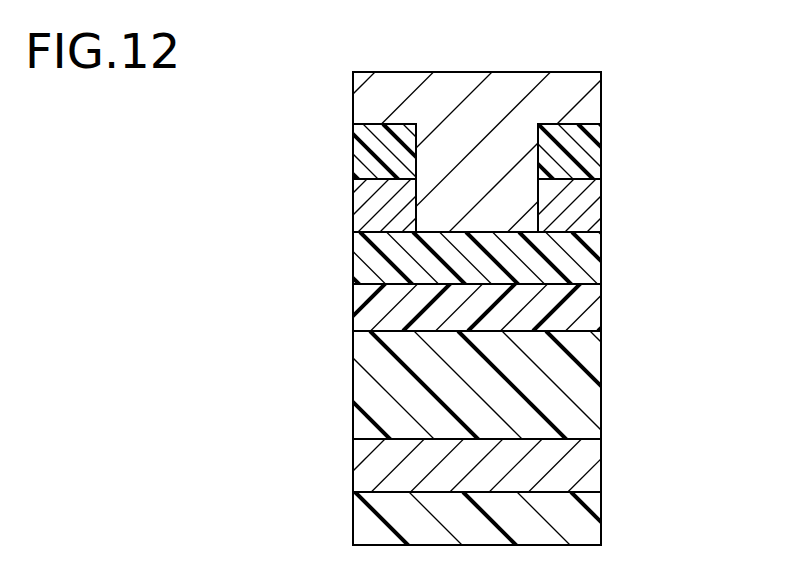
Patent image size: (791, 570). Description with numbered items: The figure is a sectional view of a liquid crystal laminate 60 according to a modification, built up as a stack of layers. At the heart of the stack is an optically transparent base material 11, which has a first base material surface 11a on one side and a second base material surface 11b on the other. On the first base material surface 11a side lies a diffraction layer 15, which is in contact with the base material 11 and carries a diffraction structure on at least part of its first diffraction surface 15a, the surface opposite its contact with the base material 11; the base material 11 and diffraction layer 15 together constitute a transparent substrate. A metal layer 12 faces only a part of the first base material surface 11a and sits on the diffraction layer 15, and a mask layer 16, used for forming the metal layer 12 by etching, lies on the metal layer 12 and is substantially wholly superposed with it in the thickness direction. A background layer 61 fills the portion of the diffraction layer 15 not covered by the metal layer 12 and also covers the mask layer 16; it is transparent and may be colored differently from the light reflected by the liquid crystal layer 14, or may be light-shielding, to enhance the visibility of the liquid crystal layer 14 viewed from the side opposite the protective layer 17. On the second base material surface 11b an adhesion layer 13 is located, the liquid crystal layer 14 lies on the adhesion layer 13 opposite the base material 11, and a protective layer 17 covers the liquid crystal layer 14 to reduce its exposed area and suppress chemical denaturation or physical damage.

The liquid crystal laminate 60 is at (686, 61).
The background layer 61 is at (601, 104).
The mask layer 16 is at (601, 156).
The metal layer 12 is at (600, 203).
The diffraction layer 15 is at (601, 253).
The first diffraction surface 15a is at (370, 232).
The base material 11 is at (601, 307).
The first base material surface 11a is at (370, 284).
The second base material surface 11b is at (374, 335).
The adhesion layer 13 is at (601, 370).
The liquid crystal layer 14 is at (601, 465).
The protective layer 17 is at (601, 512).